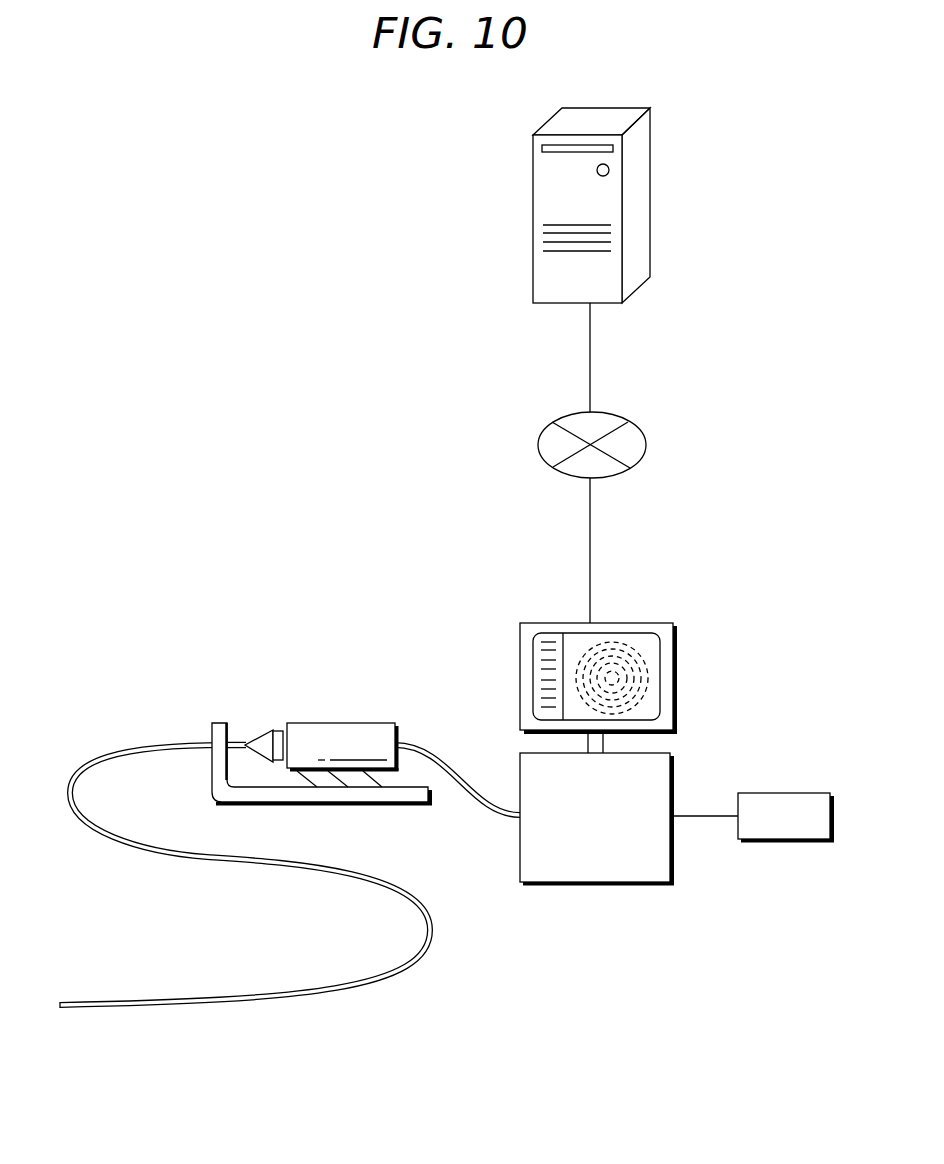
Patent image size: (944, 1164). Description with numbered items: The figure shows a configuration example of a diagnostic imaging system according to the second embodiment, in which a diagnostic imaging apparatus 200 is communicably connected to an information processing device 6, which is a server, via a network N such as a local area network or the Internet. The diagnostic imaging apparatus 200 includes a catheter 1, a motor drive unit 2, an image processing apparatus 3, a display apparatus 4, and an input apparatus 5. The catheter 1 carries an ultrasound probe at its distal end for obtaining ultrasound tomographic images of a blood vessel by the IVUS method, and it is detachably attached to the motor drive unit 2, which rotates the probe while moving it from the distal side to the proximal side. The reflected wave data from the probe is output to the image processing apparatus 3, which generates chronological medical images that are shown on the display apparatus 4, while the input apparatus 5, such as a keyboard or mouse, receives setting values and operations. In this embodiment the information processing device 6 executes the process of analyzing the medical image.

The catheter 1 is at (167, 743).
The motor drive unit 2 is at (352, 723).
The diagnostic imaging apparatus 200 is at (218, 687).
The image processing apparatus 3 is at (674, 798).
The display apparatus 4 is at (677, 671).
The input apparatus 5 is at (800, 793).
The information processing device 6 is at (602, 108).
The network N is at (625, 421).